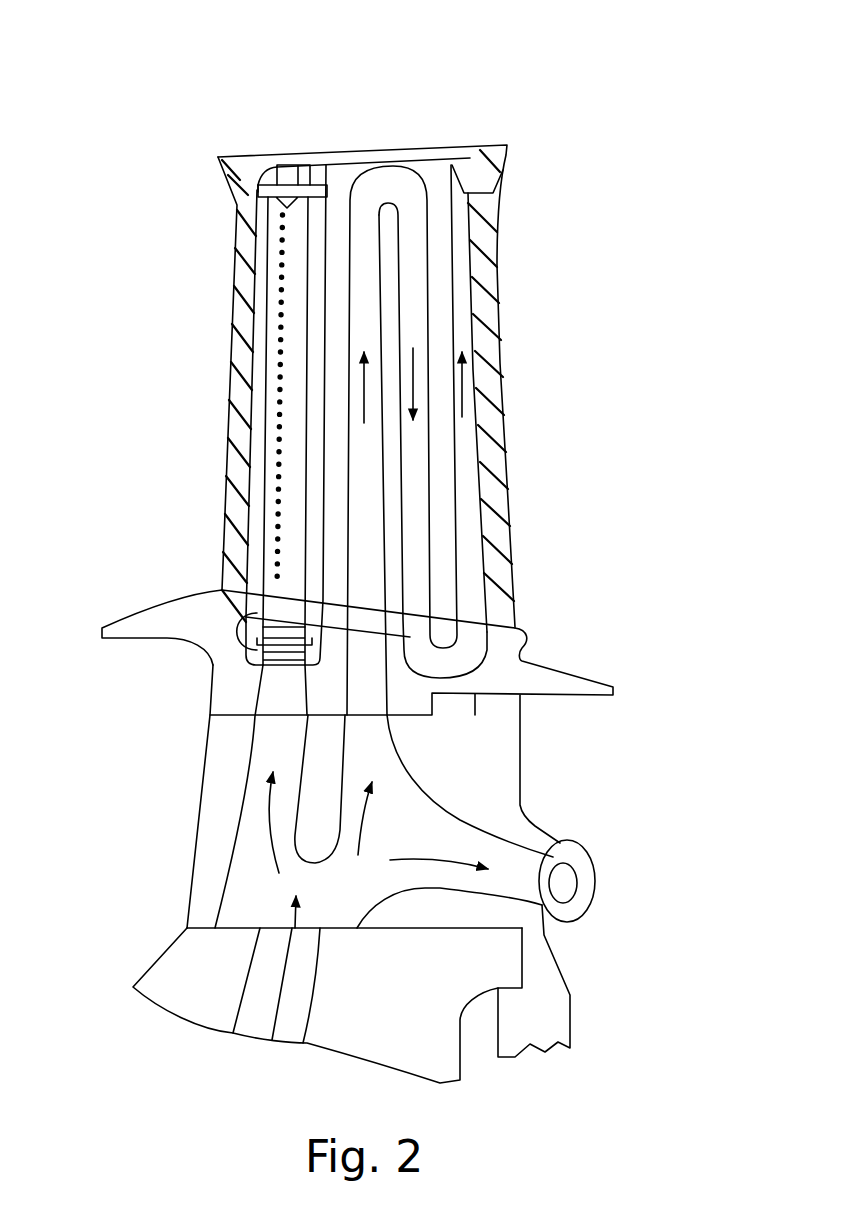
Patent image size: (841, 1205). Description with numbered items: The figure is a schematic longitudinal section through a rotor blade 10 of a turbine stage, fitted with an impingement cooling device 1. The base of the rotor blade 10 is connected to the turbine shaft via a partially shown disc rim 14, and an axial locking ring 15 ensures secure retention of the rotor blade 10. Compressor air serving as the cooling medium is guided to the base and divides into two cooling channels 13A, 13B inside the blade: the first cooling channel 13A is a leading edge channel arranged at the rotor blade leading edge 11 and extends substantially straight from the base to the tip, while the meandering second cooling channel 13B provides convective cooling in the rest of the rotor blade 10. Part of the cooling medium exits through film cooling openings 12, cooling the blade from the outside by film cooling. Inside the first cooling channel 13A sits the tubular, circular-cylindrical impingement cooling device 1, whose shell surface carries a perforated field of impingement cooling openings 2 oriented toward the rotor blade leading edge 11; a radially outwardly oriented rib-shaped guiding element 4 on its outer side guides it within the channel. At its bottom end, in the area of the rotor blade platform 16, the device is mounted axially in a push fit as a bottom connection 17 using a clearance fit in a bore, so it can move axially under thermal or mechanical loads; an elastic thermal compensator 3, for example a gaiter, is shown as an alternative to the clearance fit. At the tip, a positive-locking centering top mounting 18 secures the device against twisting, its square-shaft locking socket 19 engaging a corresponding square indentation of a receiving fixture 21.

The rotor blade 10 is at (580, 102).
The rotor blade leading edge 11 is at (222, 443).
The film cooling openings 12 is at (245, 288).
The impingement cooling device 1 is at (267, 360).
The impingement cooling openings 2 is at (283, 250).
The elastic thermal compensator 3 is at (273, 638).
The guiding element 4 is at (313, 277).
The first cooling channel 13A is at (265, 762).
The second cooling channel 13B is at (430, 836).
The disc rim 14 is at (192, 983).
The axial locking ring 15 is at (553, 1017).
The rotor blade platform 16 is at (569, 678).
The bottom connection 17 is at (277, 608).
The top mounting 18 is at (314, 177).
The locking socket 19 is at (257, 190).
The receiving fixture 21 is at (265, 178).